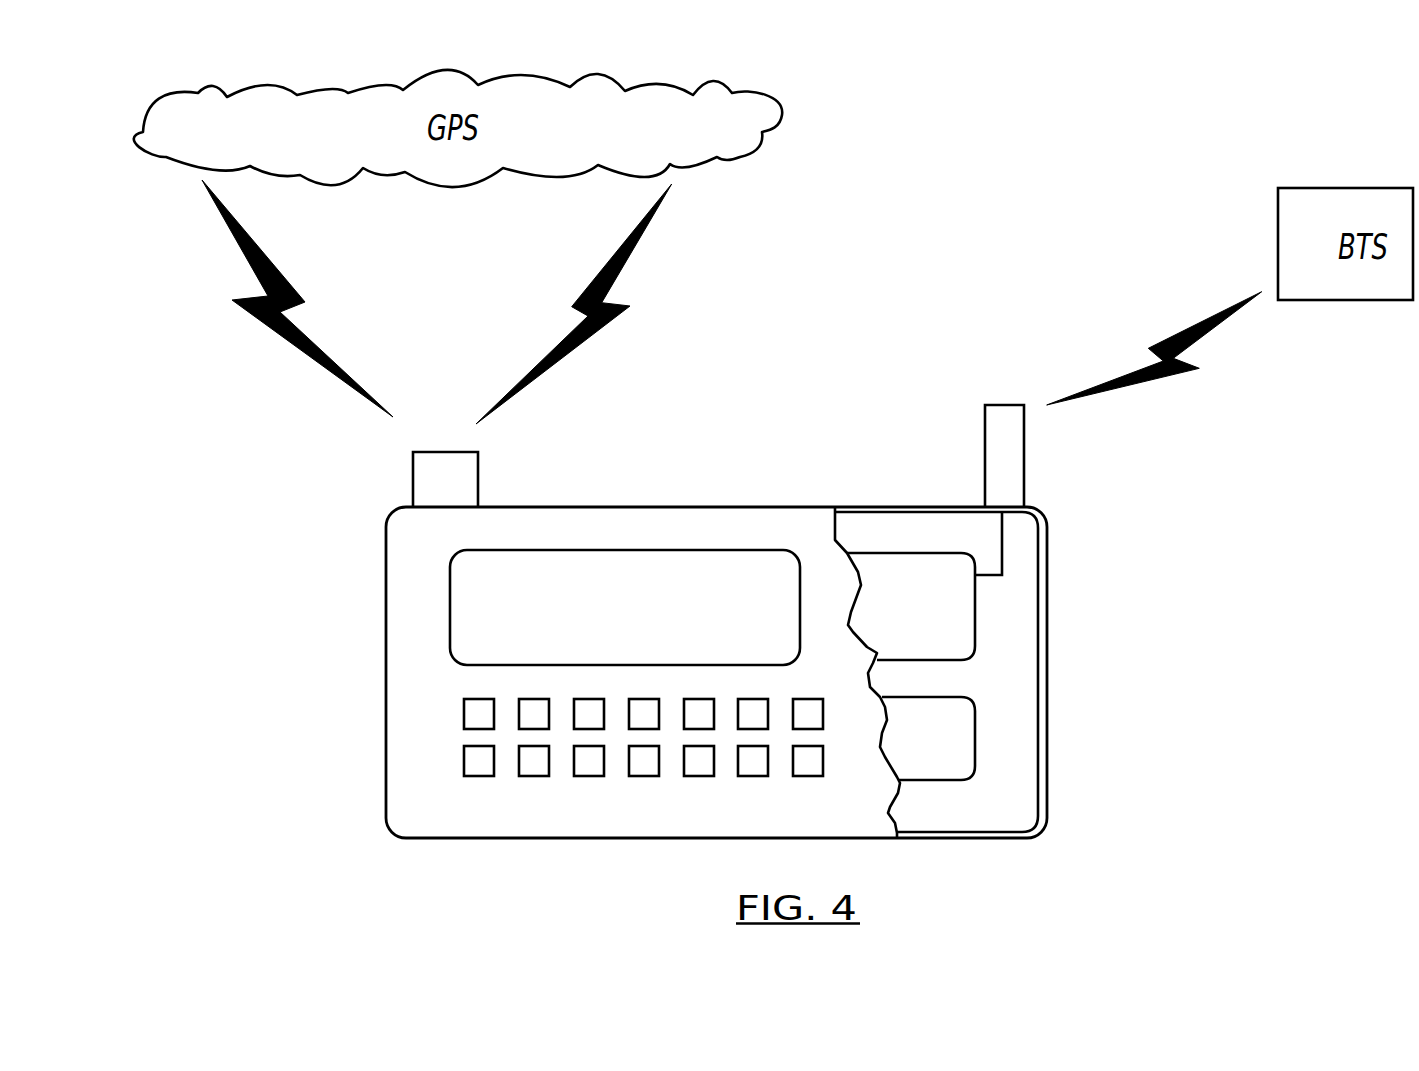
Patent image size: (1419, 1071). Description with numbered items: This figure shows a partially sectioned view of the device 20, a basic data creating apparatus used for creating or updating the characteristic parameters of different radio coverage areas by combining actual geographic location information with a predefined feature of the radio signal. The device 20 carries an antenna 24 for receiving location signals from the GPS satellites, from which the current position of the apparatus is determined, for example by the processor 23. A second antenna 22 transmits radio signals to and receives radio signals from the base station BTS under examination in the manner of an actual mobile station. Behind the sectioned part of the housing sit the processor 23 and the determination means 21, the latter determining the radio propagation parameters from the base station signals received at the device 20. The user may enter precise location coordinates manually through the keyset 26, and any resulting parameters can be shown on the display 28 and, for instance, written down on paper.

The device 20 is at (1015, 802).
The determination means 21 is at (960, 608).
The antenna 22 is at (1024, 448).
The processor 23 is at (943, 745).
The antenna 24 is at (427, 478).
The keyset 26 is at (472, 712).
The display 28 is at (472, 598).